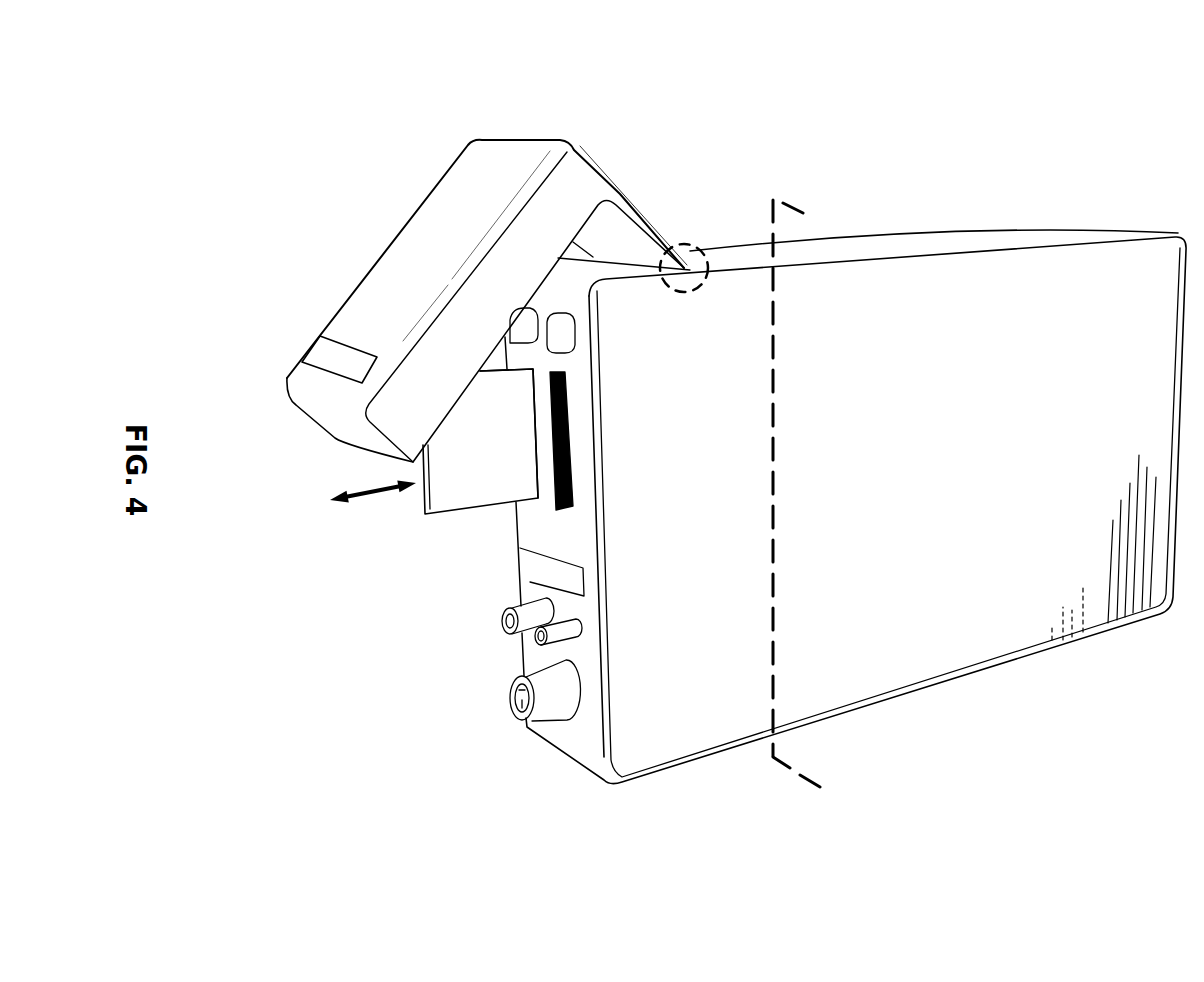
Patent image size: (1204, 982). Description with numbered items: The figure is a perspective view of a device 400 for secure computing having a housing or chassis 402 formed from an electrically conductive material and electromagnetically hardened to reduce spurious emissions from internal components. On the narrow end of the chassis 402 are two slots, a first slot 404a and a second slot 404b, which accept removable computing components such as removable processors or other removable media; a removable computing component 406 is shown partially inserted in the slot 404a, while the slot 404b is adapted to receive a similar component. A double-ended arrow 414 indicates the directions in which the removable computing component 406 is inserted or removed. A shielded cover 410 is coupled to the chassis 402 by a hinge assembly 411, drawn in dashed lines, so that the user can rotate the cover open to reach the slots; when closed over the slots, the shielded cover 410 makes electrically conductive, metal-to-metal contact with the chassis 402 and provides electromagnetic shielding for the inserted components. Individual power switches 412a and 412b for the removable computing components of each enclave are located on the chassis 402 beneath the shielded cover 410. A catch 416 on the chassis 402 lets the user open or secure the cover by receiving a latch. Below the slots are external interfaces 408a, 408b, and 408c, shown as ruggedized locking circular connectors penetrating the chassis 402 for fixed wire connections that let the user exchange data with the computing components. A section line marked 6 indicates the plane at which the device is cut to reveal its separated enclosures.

The device 400 is at (446, 70).
The chassis 402 is at (998, 243).
The slot 404a is at (535, 427).
The slot 404b is at (555, 502).
The removable computing component 406 is at (468, 483).
The external interface 408a is at (503, 620).
The external interface 408b is at (535, 638).
The external interface 408c is at (517, 700).
The shielded cover 410 is at (403, 260).
The hinge assembly 411 is at (700, 283).
The power switch 412a is at (533, 327).
The power switch 412b is at (567, 327).
The double-ended arrow 414 is at (360, 490).
The catch 416 is at (528, 560).
The section line 6 is at (805, 502).